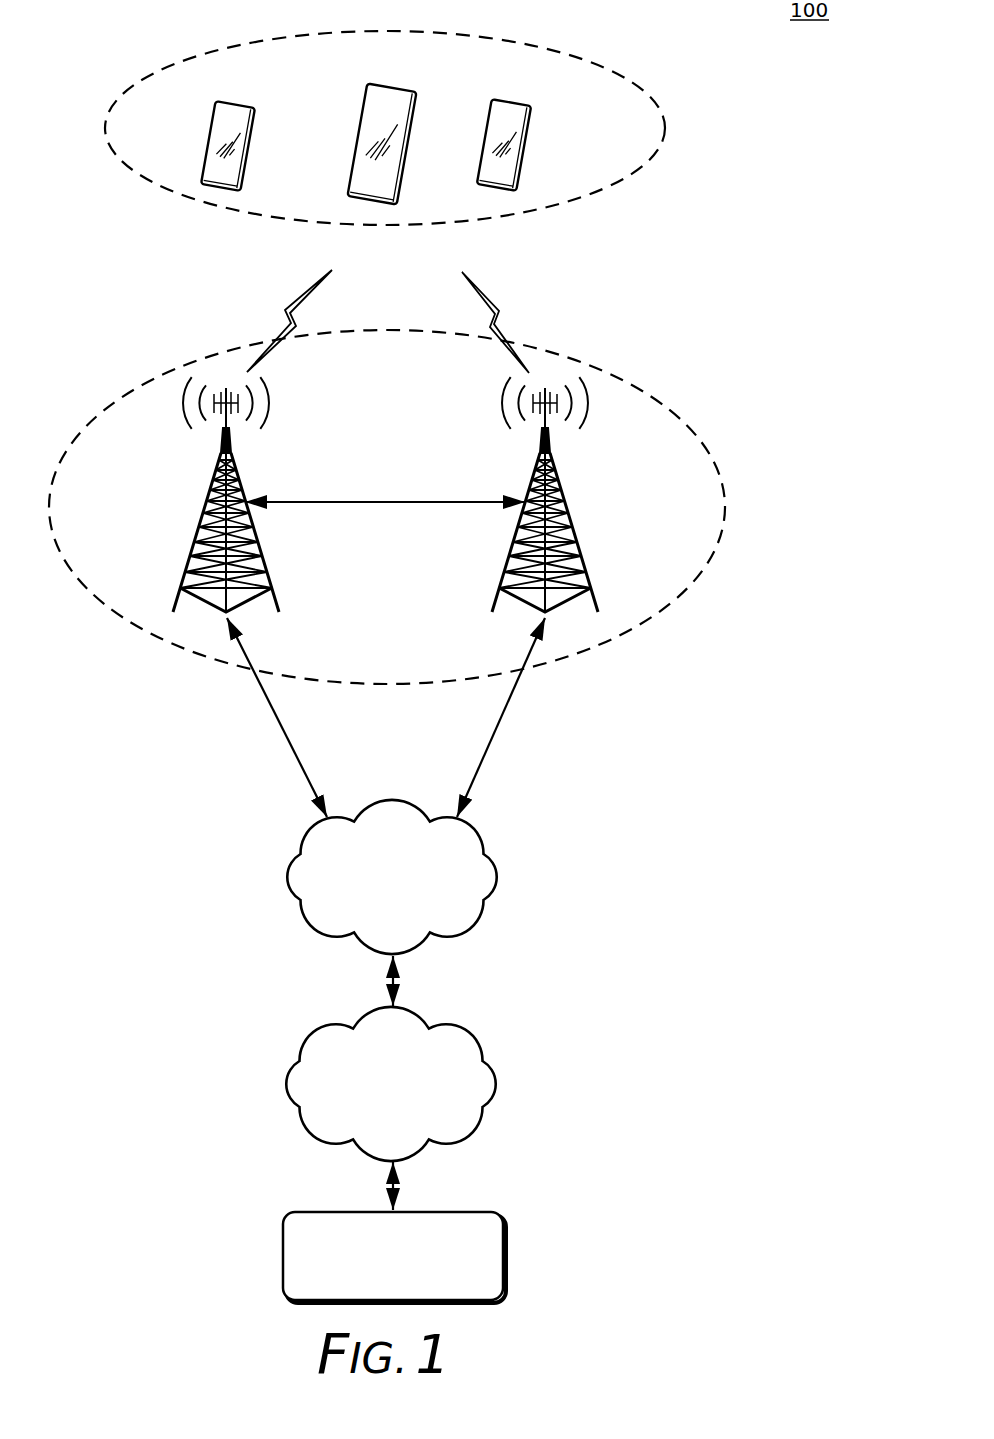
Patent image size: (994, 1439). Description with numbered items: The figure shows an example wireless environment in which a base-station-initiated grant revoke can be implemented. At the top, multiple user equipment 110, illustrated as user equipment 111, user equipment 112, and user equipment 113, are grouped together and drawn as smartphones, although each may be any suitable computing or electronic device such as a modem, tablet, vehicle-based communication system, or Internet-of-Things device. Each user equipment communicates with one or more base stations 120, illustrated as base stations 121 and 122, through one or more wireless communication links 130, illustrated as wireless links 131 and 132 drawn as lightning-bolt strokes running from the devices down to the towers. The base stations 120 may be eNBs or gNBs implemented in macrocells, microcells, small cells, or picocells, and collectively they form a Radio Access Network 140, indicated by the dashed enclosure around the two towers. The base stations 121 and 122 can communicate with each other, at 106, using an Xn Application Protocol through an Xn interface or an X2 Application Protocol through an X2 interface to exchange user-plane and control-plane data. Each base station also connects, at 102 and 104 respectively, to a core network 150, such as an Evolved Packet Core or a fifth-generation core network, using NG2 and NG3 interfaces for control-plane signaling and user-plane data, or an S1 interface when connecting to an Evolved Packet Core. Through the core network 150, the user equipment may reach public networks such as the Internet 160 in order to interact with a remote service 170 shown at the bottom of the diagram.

The user equipment 110 is at (656, 90).
The user equipment 111 is at (420, 80).
The user equipment 112 is at (258, 101).
The user equipment 113 is at (531, 131).
The base stations 120 is at (404, 402).
The base station 121 is at (208, 482).
The base station 122 is at (561, 483).
The wireless communication links 130 is at (398, 304).
The wireless link 131 is at (280, 306).
The wireless link 132 is at (517, 311).
The Radio Access Network 140 is at (662, 392).
The connection of base station 121 to the core network 102 is at (288, 732).
The connection of base station 122 to the core network 104 is at (480, 762).
The inter-base-station connection 106 is at (343, 499).
The core network 150 is at (372, 899).
The Internet 160 is at (371, 1115).
The remote service 170 is at (373, 1280).